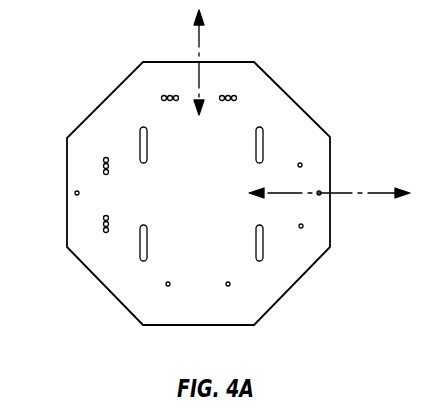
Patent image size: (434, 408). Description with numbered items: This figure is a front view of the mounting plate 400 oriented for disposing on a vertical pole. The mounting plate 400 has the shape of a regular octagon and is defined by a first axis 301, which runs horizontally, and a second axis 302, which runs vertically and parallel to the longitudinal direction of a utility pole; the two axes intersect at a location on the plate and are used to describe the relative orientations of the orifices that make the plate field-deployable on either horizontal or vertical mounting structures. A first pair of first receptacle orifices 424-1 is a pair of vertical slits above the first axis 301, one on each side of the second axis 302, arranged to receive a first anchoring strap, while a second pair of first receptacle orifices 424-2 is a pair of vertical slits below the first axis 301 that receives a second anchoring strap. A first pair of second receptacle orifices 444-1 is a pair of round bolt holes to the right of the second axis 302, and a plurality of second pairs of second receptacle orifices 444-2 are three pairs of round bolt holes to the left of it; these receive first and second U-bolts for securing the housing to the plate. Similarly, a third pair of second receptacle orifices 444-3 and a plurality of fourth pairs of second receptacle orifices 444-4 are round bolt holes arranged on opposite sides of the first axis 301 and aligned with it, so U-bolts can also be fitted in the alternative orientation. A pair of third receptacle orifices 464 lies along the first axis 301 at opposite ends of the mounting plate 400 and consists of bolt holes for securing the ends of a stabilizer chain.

The mounting plate 400 is at (115, 95).
The first axis 301 is at (333, 193).
The second axis 302 is at (199, 48).
The first pair of first receptacle orifices 424-1 is at (262, 138).
The second pair of first receptacle orifices 424-2 is at (141, 257).
The first pair of second receptacle orifices 444-1 is at (303, 227).
The second pairs of second receptacle orifices 444-2 is at (103, 230).
The third pair of second receptacle orifices 444-3 is at (230, 285).
The fourth pairs of second receptacle orifices 444-4 is at (237, 98).
The pair of third receptacle orifices 464 is at (75, 193).